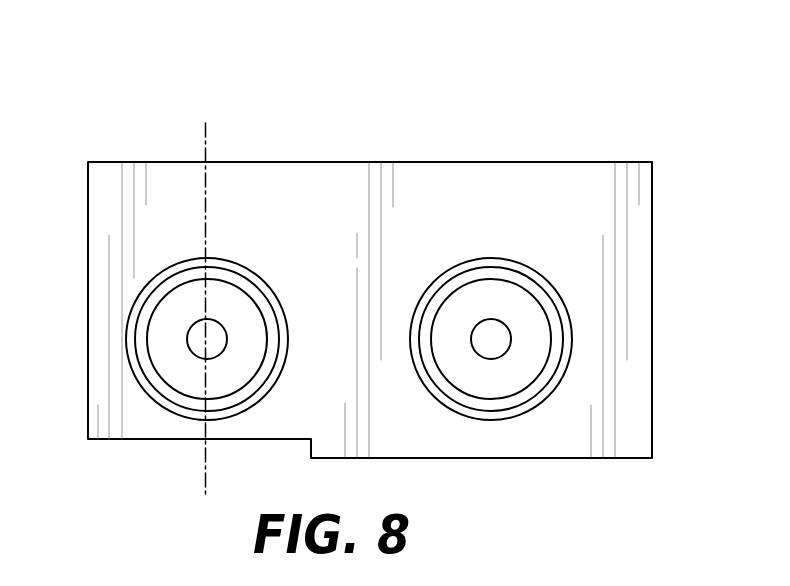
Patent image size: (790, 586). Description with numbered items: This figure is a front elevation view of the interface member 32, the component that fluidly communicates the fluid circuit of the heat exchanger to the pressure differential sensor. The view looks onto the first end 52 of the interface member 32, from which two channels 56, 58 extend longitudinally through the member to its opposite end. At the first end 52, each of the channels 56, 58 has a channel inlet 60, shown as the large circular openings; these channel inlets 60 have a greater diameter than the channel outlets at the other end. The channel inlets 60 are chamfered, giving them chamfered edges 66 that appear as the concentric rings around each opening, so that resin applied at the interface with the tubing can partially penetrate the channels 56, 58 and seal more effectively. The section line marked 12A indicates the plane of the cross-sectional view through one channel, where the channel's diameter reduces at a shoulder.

The interface member 32 is at (623, 80).
The first end 52 is at (433, 188).
The channel 56 is at (243, 276).
The channel 58 is at (513, 268).
The channel inlet 60 is at (127, 352).
The chamfered edges 66 is at (152, 393).
The section line 12A is at (206, 123).